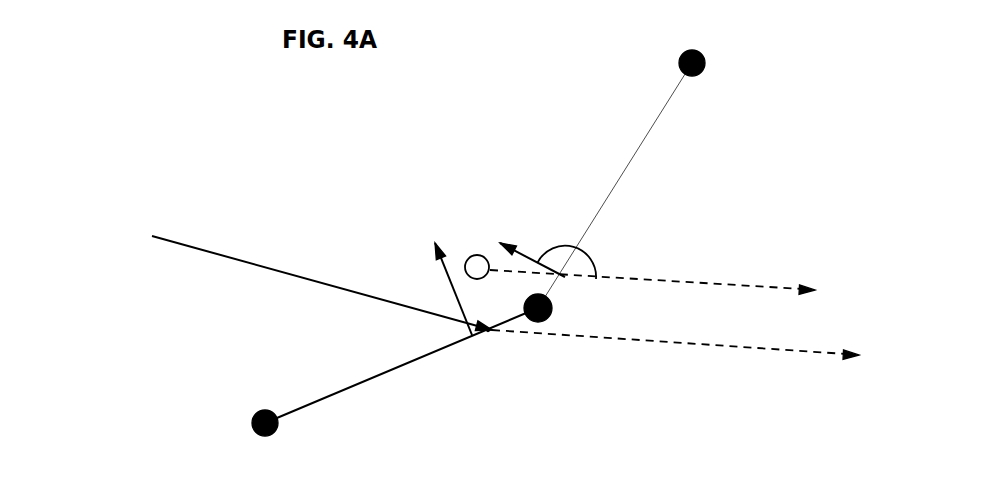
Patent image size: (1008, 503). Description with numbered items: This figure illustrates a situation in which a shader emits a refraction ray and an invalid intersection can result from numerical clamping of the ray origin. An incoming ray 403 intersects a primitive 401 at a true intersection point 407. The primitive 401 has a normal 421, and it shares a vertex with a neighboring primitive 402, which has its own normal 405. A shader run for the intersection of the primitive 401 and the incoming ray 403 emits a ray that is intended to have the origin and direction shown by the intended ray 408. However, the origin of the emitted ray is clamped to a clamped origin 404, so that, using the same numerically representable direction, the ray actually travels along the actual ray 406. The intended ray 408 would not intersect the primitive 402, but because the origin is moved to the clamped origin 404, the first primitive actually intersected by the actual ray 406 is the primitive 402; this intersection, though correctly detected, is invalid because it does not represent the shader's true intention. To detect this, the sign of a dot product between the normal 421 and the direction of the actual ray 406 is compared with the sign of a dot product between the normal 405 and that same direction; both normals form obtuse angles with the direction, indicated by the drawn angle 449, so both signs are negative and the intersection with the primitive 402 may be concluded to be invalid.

The primitive 401 is at (308, 405).
The primitive 402 is at (630, 160).
The incoming ray 403 is at (172, 241).
The clamped origin 404 is at (477, 255).
The normal 405 is at (529, 258).
The actual ray 406 is at (724, 288).
The true intersection point 407 is at (488, 331).
The intended ray 408 is at (645, 341).
The normal 421 is at (455, 295).
The angle 449 is at (590, 256).